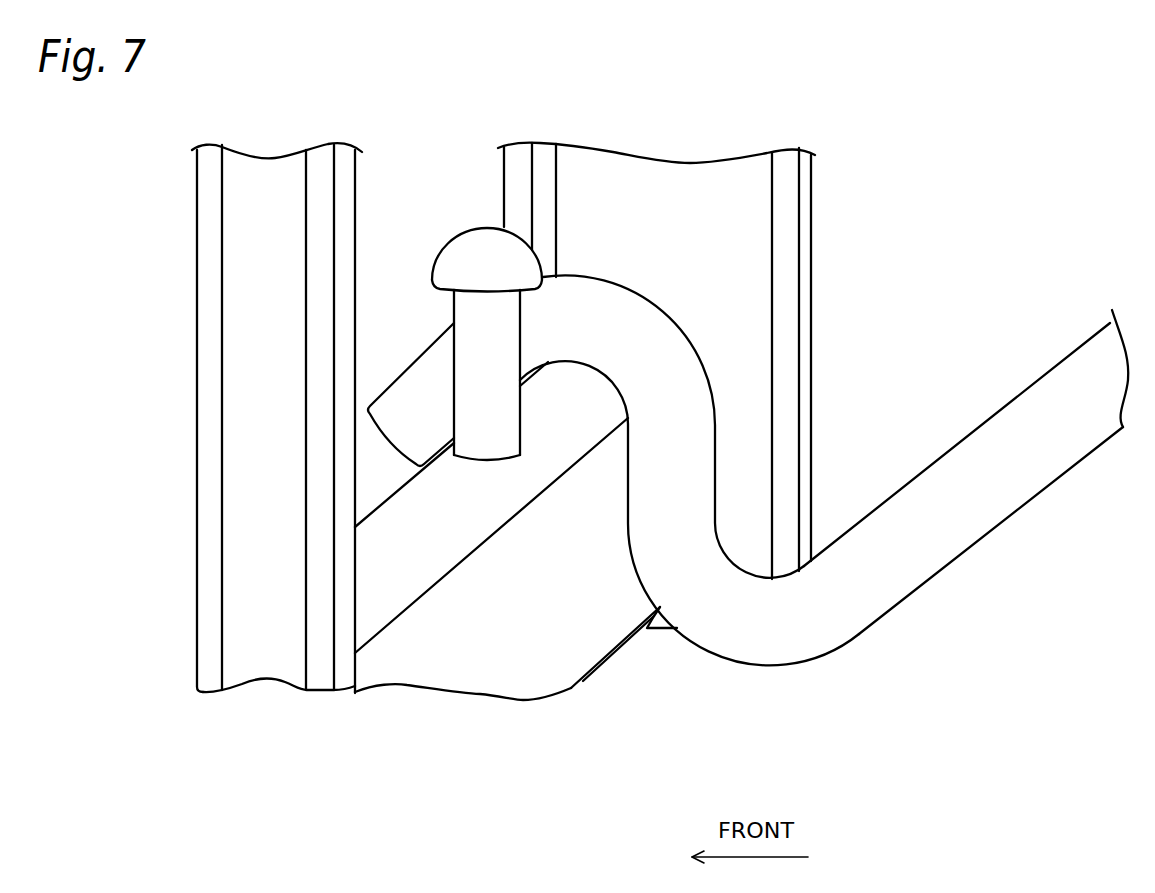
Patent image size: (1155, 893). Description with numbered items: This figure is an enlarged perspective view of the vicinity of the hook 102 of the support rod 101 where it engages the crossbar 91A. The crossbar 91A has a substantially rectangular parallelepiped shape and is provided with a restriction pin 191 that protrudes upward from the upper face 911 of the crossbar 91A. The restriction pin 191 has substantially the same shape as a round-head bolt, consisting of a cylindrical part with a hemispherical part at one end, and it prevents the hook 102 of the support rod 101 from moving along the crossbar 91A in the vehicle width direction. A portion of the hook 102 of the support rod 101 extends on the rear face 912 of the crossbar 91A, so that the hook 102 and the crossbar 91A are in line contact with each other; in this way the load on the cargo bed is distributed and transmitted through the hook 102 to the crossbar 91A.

The restriction pin 191 is at (468, 243).
The hook 102 is at (612, 297).
The support rod 101 is at (1010, 420).
The upper face 911 is at (412, 526).
The rear face 912 is at (553, 637).
The crossbar 91A is at (633, 641).